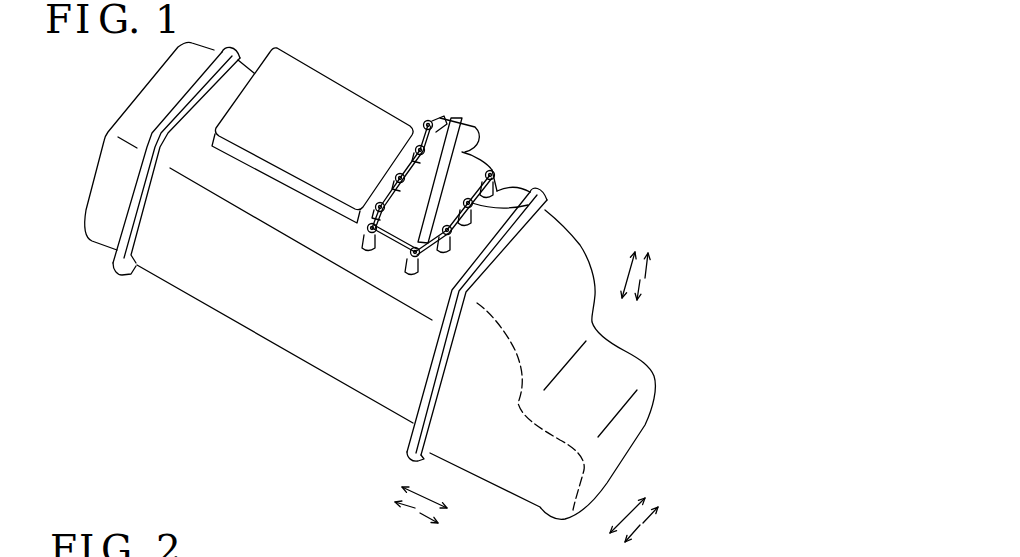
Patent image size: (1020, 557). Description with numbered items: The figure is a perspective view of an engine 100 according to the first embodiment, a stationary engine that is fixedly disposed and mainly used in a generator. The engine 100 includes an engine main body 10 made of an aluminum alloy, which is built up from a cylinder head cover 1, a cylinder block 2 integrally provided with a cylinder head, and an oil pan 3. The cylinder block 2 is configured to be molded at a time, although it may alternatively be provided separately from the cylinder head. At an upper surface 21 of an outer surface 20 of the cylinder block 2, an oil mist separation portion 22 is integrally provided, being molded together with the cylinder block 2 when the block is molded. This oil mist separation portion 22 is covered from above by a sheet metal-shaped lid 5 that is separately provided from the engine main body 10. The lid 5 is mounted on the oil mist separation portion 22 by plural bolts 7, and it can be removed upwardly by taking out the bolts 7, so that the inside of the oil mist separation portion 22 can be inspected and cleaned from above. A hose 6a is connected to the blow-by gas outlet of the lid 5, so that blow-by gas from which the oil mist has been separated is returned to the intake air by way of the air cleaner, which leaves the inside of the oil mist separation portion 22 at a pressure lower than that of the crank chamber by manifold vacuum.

The engine 100 is at (686, 76).
The engine main body 10 is at (618, 108).
The cylinder head cover 1 is at (98, 172).
The cylinder block 2 is at (318, 343).
The oil pan 3 is at (532, 483).
The lid 5 is at (468, 163).
The hose 6a is at (462, 150).
The bolts 7 is at (426, 127).
The outer surface 20 is at (532, 174).
The upper surface 21 is at (493, 203).
The oil mist separation portion 22 is at (498, 193).